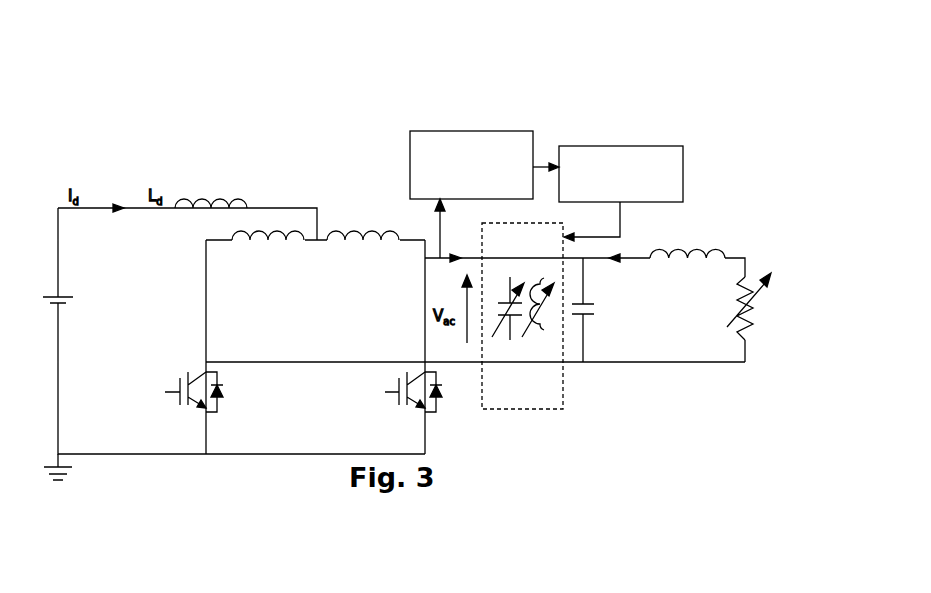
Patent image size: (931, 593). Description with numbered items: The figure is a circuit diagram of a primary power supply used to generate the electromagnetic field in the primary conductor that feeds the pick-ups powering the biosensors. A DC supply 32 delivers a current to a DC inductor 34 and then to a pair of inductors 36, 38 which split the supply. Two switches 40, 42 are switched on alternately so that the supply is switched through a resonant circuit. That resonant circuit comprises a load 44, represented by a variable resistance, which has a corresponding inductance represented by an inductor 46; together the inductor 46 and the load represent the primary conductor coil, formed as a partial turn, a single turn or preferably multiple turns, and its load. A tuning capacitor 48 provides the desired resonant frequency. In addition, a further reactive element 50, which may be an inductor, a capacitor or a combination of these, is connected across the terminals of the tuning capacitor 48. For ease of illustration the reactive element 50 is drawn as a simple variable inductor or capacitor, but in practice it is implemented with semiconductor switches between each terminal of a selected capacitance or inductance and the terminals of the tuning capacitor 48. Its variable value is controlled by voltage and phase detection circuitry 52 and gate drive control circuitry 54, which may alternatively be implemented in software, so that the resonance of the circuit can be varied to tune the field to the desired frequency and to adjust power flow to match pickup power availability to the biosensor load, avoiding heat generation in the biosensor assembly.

The DC supply 32 is at (62, 303).
The DC inductor 34 is at (218, 200).
The inductor 36 is at (252, 241).
The inductor 38 is at (370, 238).
The switch 40 is at (178, 390).
The switch 42 is at (394, 390).
The load 44 is at (750, 312).
The inductor 46 is at (725, 257).
The tuning capacitor 48 is at (590, 305).
The reactive element 50 is at (563, 397).
The voltage and phase detection circuitry 52 is at (437, 131).
The gate drive control circuitry 54 is at (664, 146).